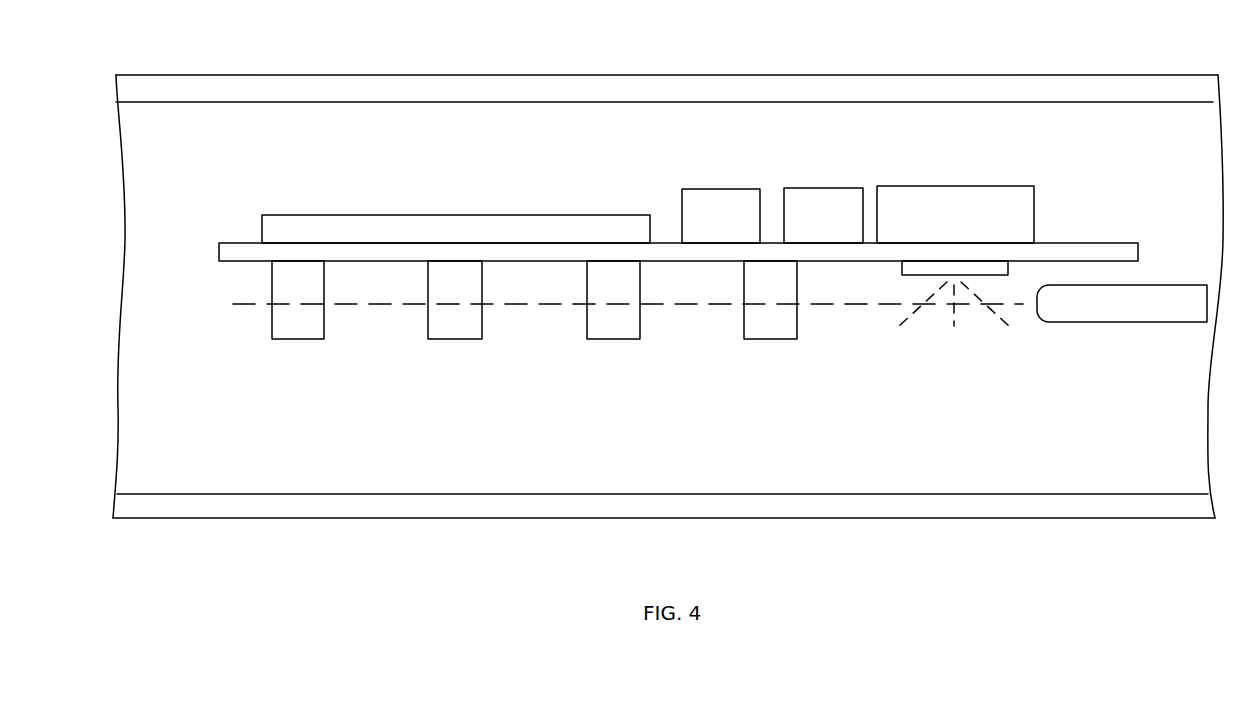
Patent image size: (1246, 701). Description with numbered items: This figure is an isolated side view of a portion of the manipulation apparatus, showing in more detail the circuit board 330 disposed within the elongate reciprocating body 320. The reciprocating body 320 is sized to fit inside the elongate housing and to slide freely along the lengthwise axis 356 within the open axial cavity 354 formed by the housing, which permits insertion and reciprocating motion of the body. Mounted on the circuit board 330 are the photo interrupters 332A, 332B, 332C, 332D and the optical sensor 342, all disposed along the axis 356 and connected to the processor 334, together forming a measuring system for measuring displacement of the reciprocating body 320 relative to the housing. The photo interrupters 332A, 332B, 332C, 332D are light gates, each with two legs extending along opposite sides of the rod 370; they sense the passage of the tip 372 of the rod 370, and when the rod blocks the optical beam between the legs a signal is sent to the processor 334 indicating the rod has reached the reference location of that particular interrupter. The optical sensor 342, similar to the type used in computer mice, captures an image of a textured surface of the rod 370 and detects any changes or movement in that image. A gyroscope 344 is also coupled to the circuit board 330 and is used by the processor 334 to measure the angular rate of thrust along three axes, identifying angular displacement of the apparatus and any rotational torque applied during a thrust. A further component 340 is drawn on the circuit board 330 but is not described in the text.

The elongate reciprocating body 320 is at (378, 87).
The circuit board 330 is at (237, 242).
The photo interrupter 332A is at (765, 342).
The photo interrupter 332B is at (607, 342).
The photo interrupter 332C is at (450, 342).
The photo interrupter 332D is at (282, 342).
The processor 334 is at (693, 187).
The battery 340 is at (304, 212).
The optical sensor 342 is at (902, 185).
The gyroscope 344 is at (803, 187).
The open axial cavity 354 is at (116, 137).
The lengthwise axis 356 is at (243, 307).
The rod 370 is at (1097, 307).
The tip 372 is at (1038, 315).